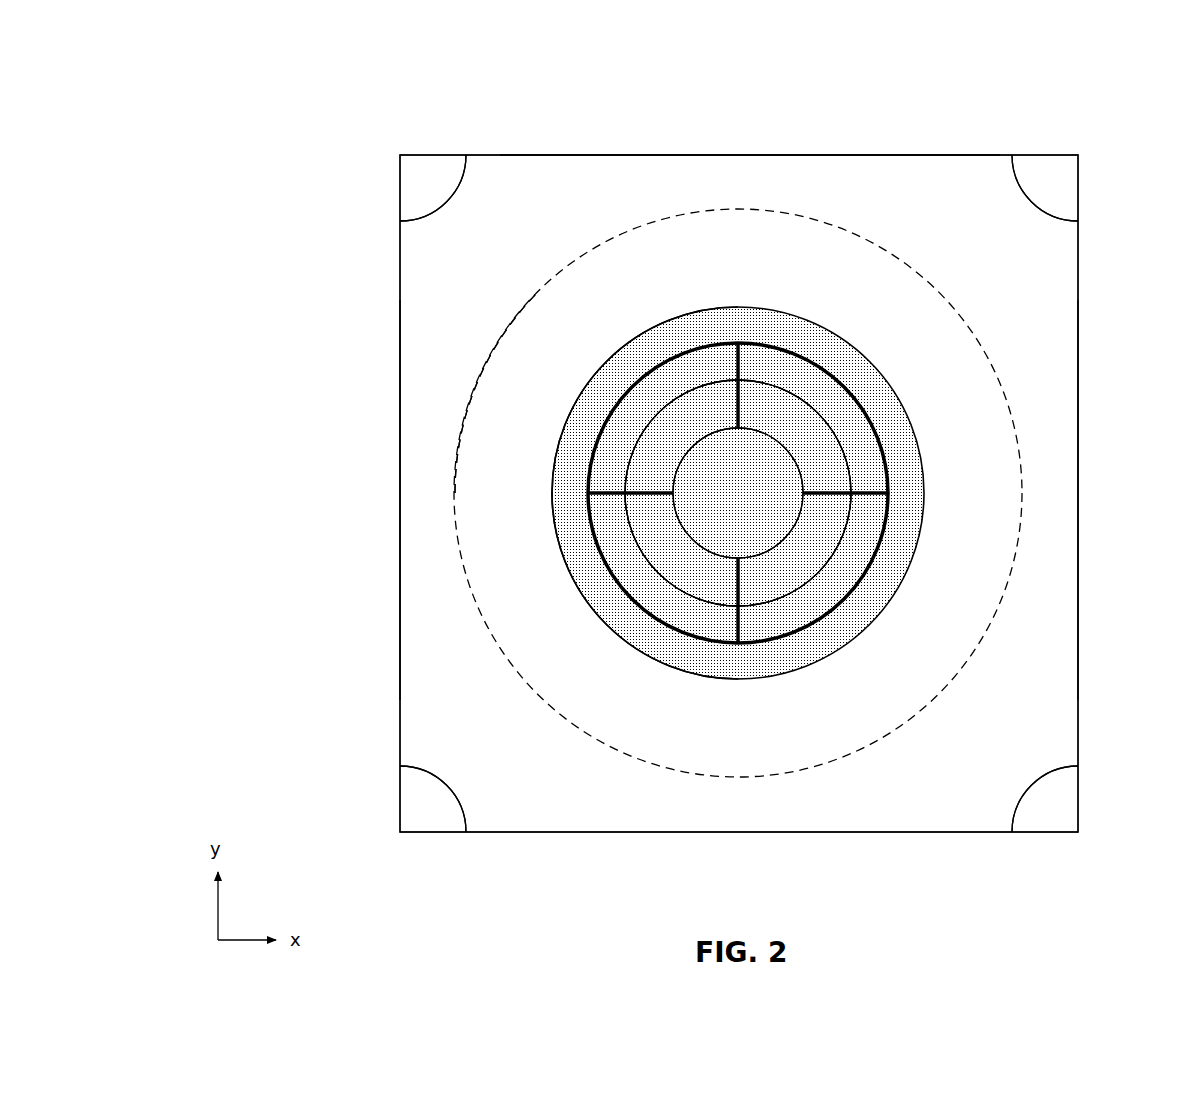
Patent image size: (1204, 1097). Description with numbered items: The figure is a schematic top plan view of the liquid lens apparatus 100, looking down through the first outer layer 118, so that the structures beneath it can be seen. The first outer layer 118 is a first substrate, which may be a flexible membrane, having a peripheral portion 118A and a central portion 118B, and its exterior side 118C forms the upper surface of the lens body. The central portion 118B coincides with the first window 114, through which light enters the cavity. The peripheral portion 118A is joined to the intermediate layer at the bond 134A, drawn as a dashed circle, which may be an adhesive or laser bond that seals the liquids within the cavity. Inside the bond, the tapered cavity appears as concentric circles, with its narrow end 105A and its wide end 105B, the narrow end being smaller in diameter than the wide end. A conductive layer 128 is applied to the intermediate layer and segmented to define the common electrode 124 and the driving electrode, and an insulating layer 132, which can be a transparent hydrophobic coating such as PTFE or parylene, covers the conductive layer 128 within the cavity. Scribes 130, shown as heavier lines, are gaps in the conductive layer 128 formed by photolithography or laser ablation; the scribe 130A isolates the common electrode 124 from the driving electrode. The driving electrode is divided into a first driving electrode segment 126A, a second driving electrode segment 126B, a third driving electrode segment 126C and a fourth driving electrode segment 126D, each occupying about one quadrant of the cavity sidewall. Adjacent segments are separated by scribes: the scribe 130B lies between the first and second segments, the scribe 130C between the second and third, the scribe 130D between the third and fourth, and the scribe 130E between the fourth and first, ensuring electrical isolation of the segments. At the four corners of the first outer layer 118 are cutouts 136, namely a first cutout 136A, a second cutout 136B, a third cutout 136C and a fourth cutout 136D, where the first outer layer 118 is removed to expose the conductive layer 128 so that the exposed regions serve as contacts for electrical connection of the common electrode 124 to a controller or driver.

The liquid lens apparatus 100 is at (960, 85).
The narrow end 105A is at (637, 513).
The wide end 105B is at (650, 548).
The first window 114 is at (812, 445).
The first outer layer 118 is at (1053, 317).
The peripheral portion 118A is at (417, 488).
The central portion 118B is at (888, 455).
The exterior side 118C is at (817, 172).
The common electrode 124 is at (712, 253).
The first driving electrode segment 126A is at (683, 418).
The second driving electrode segment 126B is at (767, 412).
The third driving electrode segment 126C is at (808, 549).
The fourth driving electrode segment 126D is at (680, 562).
The conductive layer 128 is at (523, 412).
The scribes 130 is at (920, 537).
The scribe 130A is at (583, 387).
The scribe 130B is at (742, 400).
The scribe 130C is at (837, 493).
The scribe 130D is at (745, 588).
The scribe 130E is at (637, 496).
The insulating layer 132 is at (572, 485).
The bond 134A is at (523, 308).
The cutouts 136 is at (428, 168).
The first cutout 136A is at (418, 199).
The second cutout 136B is at (1048, 187).
The third cutout 136C is at (1050, 820).
The fourth cutout 136D is at (420, 813).